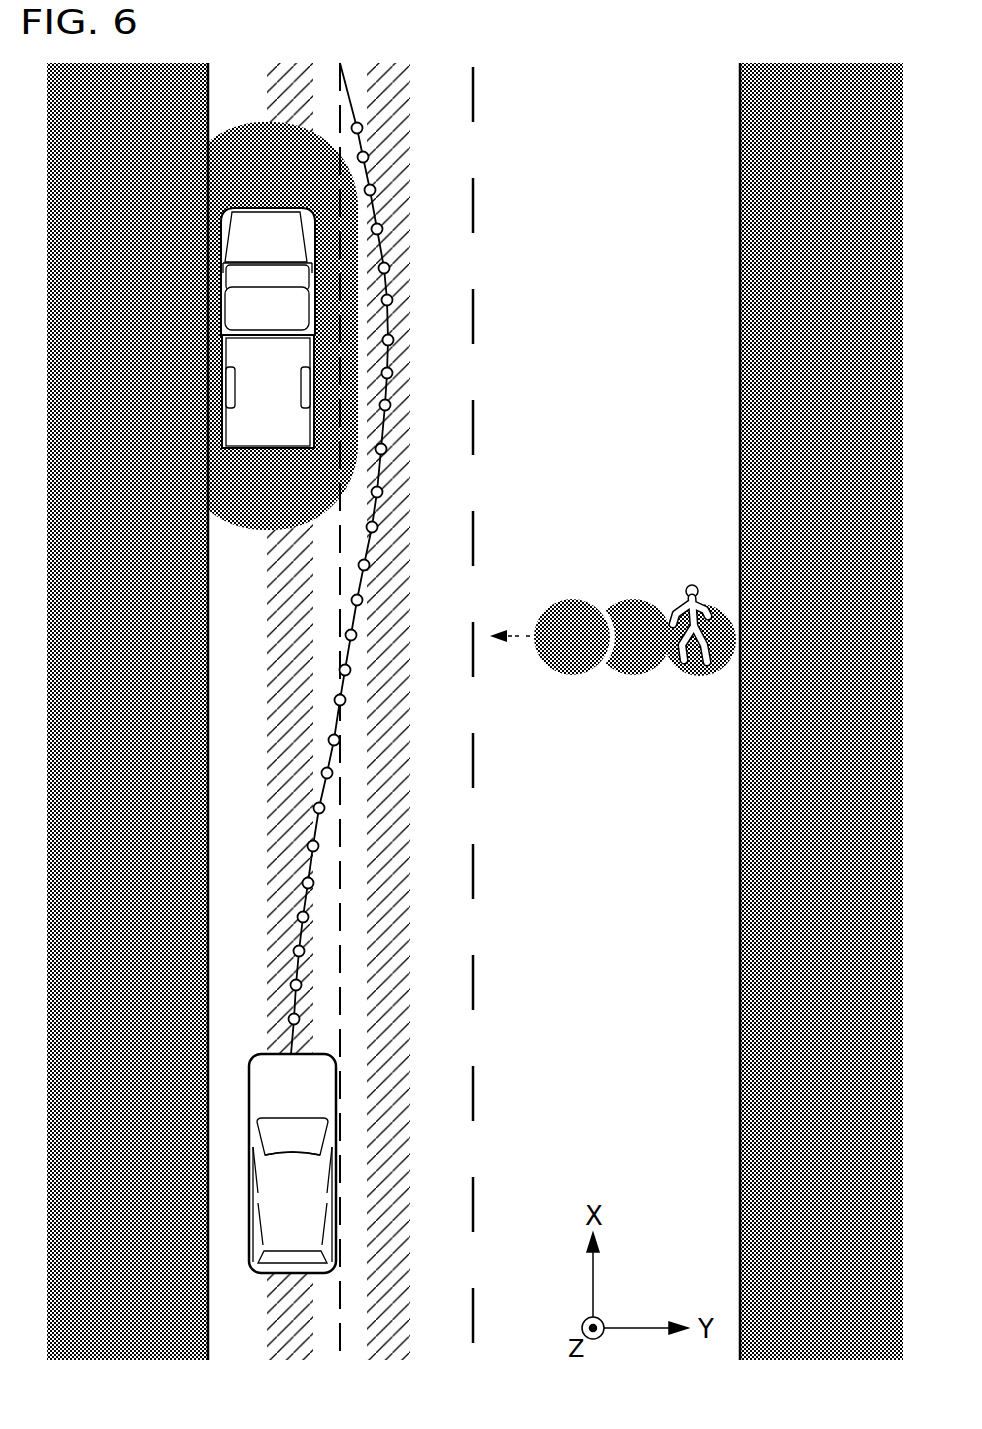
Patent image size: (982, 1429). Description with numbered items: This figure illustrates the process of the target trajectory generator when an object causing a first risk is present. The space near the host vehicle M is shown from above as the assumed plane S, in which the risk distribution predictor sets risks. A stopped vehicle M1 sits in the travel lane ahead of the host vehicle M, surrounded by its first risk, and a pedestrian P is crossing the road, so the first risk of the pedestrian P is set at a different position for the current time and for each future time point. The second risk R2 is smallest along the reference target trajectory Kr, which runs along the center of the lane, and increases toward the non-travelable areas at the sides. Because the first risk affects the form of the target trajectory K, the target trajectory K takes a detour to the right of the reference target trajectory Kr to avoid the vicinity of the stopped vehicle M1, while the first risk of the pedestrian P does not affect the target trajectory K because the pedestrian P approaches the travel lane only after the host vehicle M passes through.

The host vehicle M is at (338, 1168).
The stopped vehicle M1 is at (317, 395).
The pedestrian P is at (693, 584).
The second risk R2 is at (134, 727).
The assumed plane S is at (613, 293).
The target trajectory K is at (314, 828).
The reference target trajectory Kr is at (342, 913).